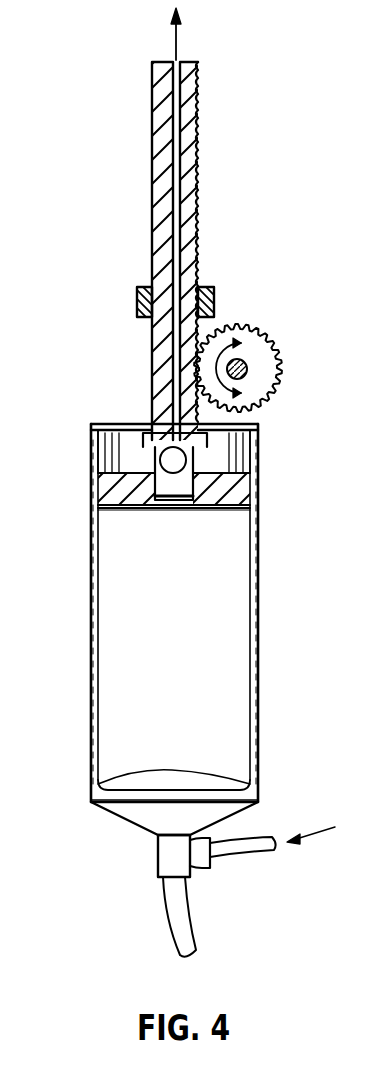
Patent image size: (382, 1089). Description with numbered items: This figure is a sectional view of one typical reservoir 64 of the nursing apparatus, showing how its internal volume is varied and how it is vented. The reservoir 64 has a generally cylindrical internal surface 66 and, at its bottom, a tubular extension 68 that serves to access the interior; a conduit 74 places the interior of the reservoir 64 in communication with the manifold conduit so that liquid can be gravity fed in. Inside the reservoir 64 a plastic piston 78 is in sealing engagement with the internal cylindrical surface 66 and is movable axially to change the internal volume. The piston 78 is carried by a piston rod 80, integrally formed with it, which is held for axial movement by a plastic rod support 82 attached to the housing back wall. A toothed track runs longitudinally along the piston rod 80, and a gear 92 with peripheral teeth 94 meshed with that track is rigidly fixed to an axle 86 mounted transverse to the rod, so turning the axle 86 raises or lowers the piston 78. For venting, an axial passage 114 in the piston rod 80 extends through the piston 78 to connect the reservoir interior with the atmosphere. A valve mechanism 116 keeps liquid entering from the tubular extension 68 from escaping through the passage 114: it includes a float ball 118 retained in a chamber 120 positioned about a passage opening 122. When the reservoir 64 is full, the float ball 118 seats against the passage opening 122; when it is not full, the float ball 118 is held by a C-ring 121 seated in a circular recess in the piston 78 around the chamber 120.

The reservoir 64 is at (277, 581).
The internal cylindrical surface 66 is at (96, 617).
The tubular extension 68 is at (158, 855).
The conduit 74 is at (228, 862).
The piston 78 is at (232, 514).
The piston rod 80 is at (152, 198).
The rod support 82 is at (137, 304).
The axle 86 is at (246, 360).
The gear 92 is at (259, 354).
The peripheral teeth 94 is at (279, 383).
The axial passage 114 is at (178, 60).
The valve mechanism 116 is at (140, 410).
The float ball 118 is at (165, 458).
The chamber 120 is at (190, 472).
The C-ring 121 is at (150, 508).
The passage opening 122 is at (222, 441).